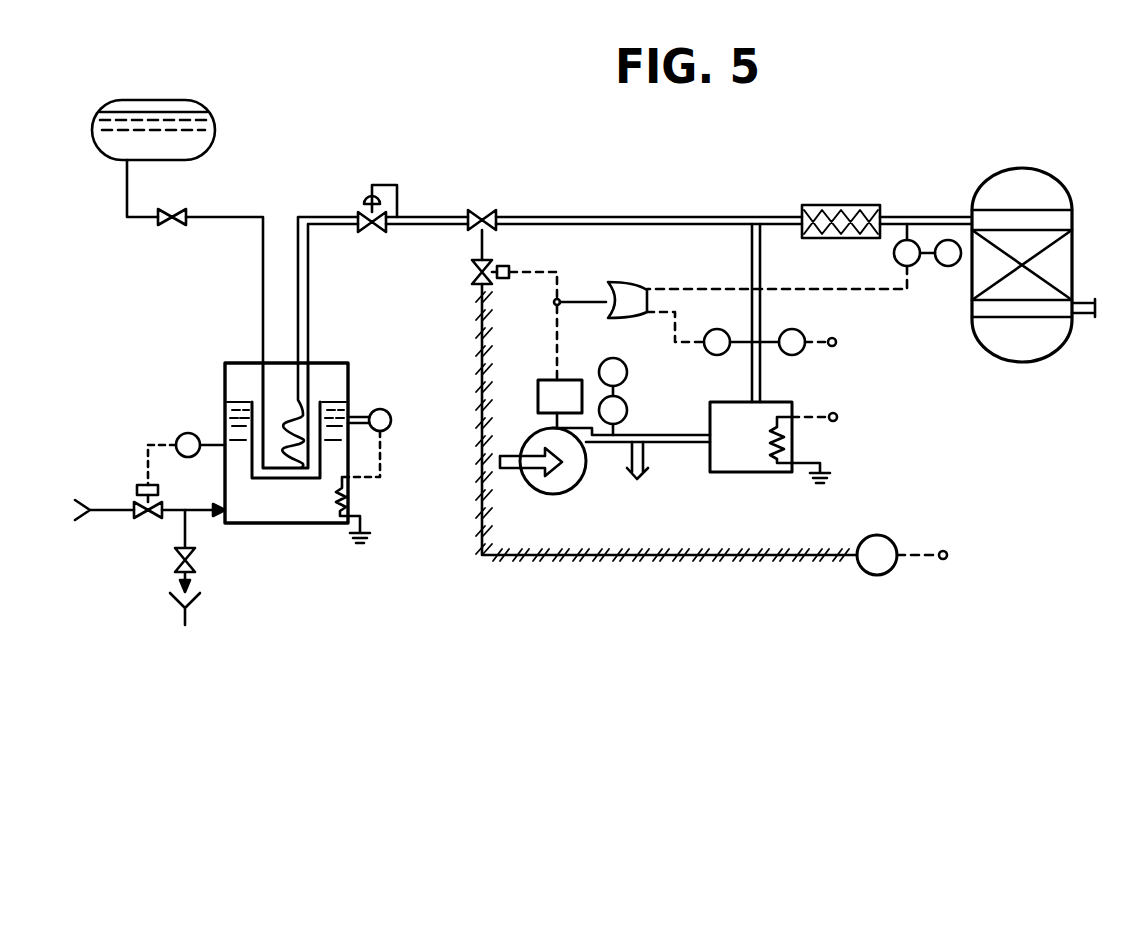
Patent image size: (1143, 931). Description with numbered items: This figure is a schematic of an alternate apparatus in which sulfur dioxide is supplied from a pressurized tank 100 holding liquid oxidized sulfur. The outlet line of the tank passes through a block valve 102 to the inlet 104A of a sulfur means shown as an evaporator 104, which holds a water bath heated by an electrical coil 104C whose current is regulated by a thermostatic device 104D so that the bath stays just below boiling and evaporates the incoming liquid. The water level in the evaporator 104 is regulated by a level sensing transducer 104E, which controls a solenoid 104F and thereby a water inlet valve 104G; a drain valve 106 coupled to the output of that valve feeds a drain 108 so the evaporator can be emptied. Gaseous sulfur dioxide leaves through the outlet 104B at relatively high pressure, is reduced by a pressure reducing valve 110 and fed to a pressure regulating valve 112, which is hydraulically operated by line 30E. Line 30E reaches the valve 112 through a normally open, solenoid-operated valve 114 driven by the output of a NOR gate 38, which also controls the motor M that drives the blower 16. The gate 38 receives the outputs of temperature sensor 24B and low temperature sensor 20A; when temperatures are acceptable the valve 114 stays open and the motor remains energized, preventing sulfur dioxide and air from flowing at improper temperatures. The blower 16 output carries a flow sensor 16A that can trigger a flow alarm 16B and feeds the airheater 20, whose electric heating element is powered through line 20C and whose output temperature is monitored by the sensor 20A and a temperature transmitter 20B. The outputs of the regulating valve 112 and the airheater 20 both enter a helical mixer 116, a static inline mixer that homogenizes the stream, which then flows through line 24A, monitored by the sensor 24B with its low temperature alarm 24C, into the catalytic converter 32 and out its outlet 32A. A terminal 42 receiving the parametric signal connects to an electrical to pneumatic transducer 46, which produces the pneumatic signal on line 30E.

The tank 100 is at (215, 122).
The block valve 102 is at (170, 210).
The sulfur means (evaporator) 104 is at (242, 363).
The inlet 104A is at (263, 283).
The outlet 104B is at (308, 283).
The electrical coil 104C is at (332, 497).
The thermostatic device 104D is at (378, 409).
The level sensing transducer 104E is at (192, 433).
The solenoid 104F is at (137, 487).
The water inlet valve 104G is at (146, 519).
The drain valve 106 is at (194, 558).
The drain 108 is at (186, 613).
The pressure reducing valve 110 is at (362, 210).
The pressure regulating valve 112 is at (476, 210).
The normally open valve 114 is at (471, 272).
The helical mixer 116 is at (850, 203).
The blower 16 is at (540, 493).
The flow sensor 16A is at (627, 410).
The flow alarm 16B is at (618, 358).
The airheater 20 is at (733, 472).
The low temperature sensor 20A is at (736, 320).
The temperature transmitter 20B is at (795, 330).
The line (electric heating element) 20C is at (837, 420).
The line 24A is at (938, 217).
The temperature sensor 24B is at (895, 260).
The low temperature alarm 24C is at (948, 266).
The catalytic converter 32 is at (1075, 282).
The outlet 32A is at (1090, 318).
The NOR gate 38 is at (645, 282).
The line 30E is at (757, 553).
The electrical to pneumatic transducer 46 is at (906, 512).
The terminal 42 is at (947, 555).